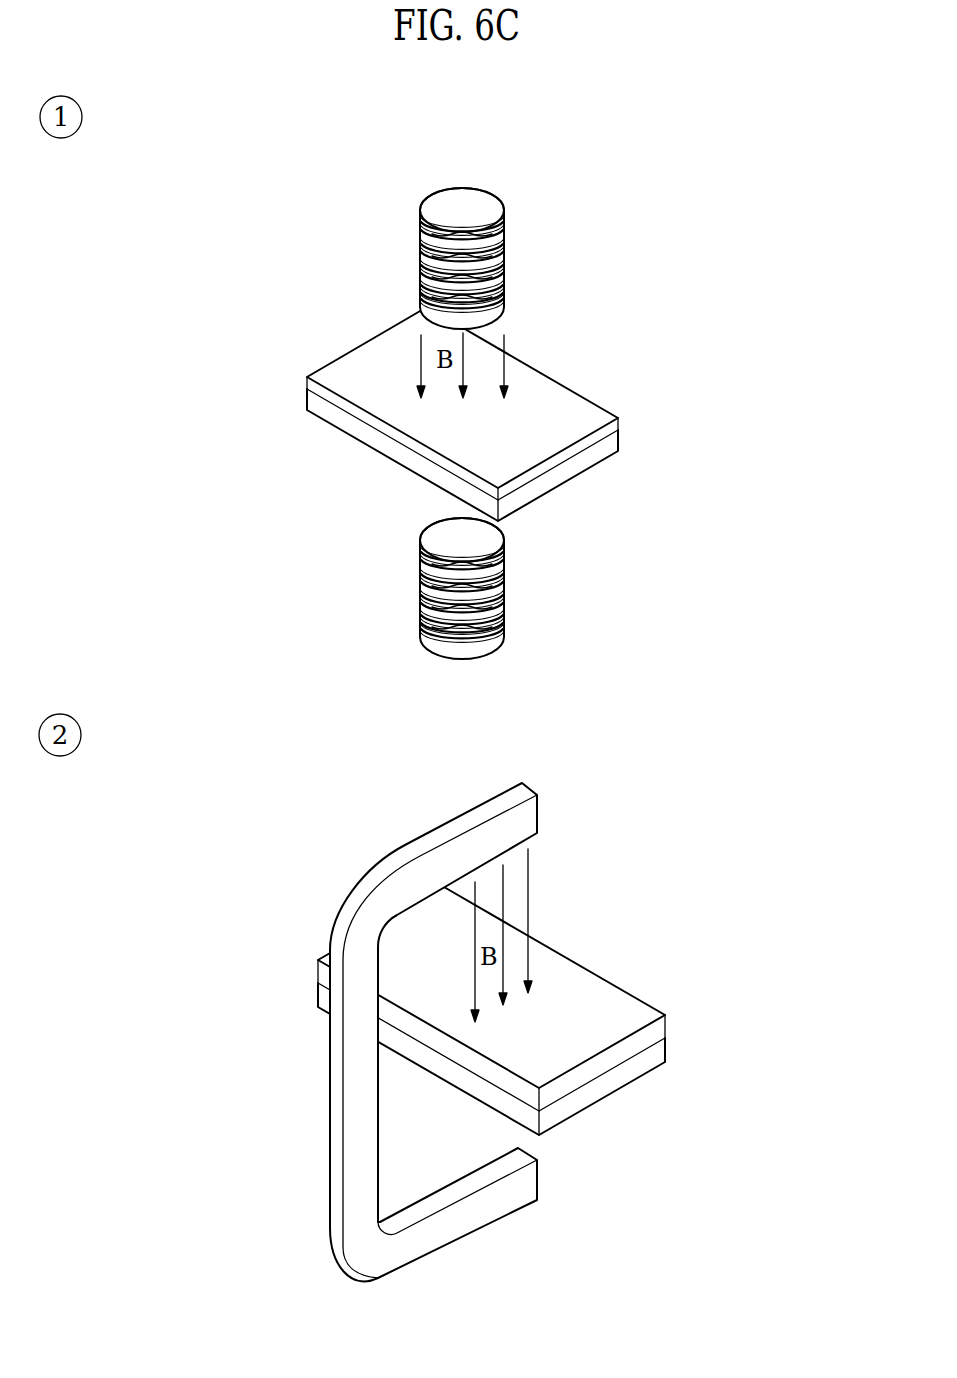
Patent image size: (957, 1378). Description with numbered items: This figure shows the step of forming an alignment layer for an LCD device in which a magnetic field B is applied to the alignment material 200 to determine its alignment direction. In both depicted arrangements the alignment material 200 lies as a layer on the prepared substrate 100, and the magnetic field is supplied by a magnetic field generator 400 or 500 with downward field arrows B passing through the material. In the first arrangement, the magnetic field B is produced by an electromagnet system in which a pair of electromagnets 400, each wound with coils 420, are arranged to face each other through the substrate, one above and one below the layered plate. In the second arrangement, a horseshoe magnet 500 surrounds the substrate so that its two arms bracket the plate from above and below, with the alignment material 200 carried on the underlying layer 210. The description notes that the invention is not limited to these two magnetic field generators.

The substrate 100 is at (307, 400).
The alignment material 200 is at (307, 383).
The support layer 210 is at (660, 1054).
The electromagnet 400 is at (490, 205).
The coil 420 is at (506, 277).
The magnetic field generator 500 is at (530, 815).